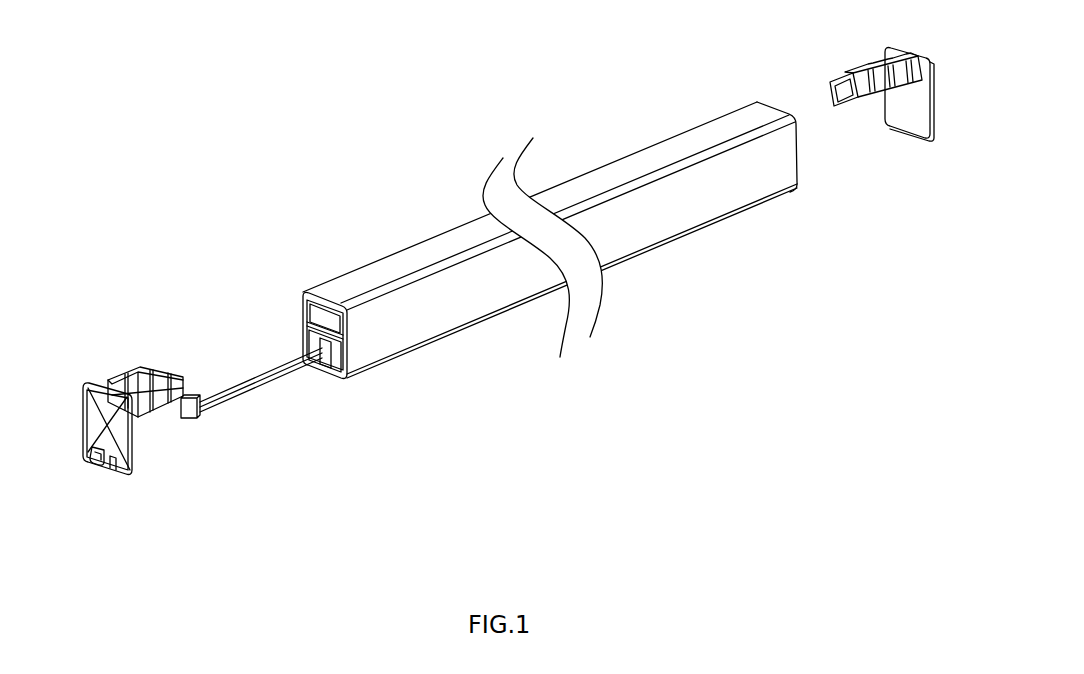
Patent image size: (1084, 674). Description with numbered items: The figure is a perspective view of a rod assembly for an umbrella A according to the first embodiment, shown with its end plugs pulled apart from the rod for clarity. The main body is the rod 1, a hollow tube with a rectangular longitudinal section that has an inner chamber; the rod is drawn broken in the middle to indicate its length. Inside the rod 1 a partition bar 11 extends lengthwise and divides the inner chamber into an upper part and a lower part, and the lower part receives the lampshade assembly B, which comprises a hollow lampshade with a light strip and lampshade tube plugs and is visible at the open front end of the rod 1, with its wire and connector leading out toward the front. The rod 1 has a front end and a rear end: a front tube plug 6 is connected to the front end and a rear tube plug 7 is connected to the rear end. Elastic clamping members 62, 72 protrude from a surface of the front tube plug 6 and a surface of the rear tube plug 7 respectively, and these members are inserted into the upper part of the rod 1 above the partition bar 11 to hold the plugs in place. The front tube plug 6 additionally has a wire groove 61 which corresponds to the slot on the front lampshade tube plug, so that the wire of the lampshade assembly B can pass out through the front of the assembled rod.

The rod 1 is at (503, 291).
The partition bar 11 is at (305, 312).
The front tube plug 6 is at (118, 428).
The wire groove 61 is at (100, 462).
The elastic clamping member 62 is at (138, 370).
The rear tube plug 7 is at (908, 112).
The elastic clamping member 72 is at (868, 65).
The rod assembly for an umbrella A is at (633, 130).
The lampshade assembly B is at (327, 380).